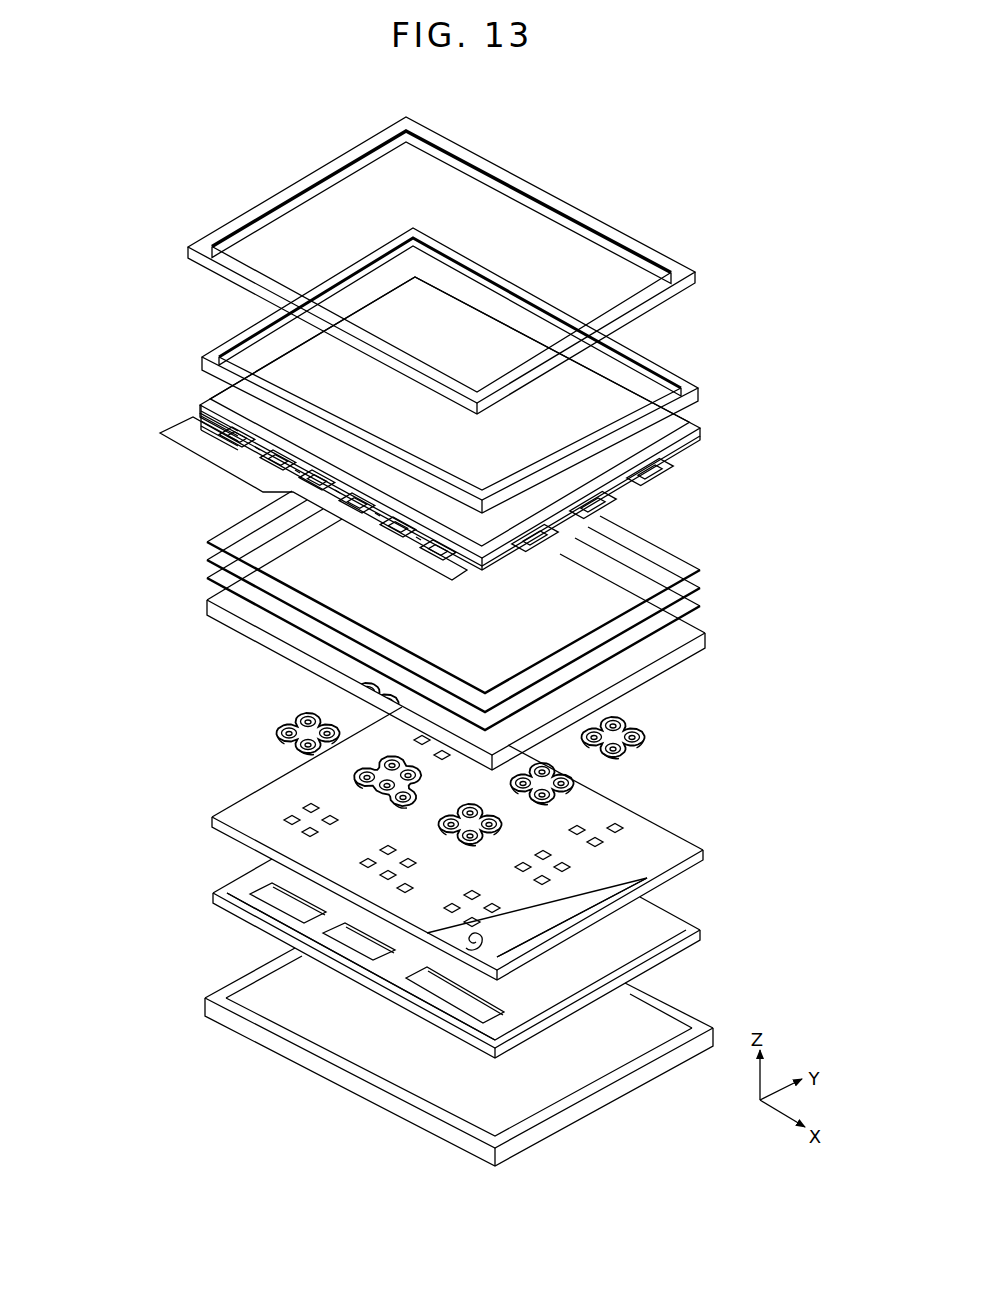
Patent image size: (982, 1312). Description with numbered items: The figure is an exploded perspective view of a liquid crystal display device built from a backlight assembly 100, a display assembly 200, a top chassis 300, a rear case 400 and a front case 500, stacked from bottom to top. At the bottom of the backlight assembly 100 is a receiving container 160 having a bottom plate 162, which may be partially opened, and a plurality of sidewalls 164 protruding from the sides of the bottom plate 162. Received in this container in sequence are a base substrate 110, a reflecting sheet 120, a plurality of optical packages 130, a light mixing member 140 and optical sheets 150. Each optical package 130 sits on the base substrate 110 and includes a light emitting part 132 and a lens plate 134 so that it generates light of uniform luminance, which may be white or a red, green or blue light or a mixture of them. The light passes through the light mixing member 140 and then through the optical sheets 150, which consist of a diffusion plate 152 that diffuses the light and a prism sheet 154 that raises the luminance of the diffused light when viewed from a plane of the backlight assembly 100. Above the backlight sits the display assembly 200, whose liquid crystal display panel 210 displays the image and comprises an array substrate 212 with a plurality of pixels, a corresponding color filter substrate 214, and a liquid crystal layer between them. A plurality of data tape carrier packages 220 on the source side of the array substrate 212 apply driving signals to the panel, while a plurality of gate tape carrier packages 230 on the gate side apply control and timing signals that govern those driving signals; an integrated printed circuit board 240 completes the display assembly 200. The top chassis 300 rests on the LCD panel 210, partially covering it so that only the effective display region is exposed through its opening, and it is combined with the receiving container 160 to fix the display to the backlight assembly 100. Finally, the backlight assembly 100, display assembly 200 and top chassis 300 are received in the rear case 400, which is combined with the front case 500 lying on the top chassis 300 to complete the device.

The backlight assembly 100 is at (526, 779).
The base substrate 110 is at (500, 957).
The reflecting sheet 120 is at (466, 939).
The optical package 130 is at (486, 831).
The light emitting part 132 is at (620, 826).
The lens plate 134 is at (646, 742).
The light mixing member 140 is at (698, 642).
The optical sheets 150 is at (499, 610).
The diffusion plate 152 is at (750, 548).
The prism sheet 154 is at (698, 575).
The receiving container 160 is at (490, 963).
The bottom plate 162 is at (525, 1005).
The sidewall 164 is at (577, 1003).
The display assembly 200 is at (435, 428).
The liquid crystal display panel 210 is at (491, 423).
The array substrate 212 is at (692, 440).
The color filter substrate 214 is at (670, 428).
The data tape carrier package 220 is at (198, 413).
The gate tape carrier package 230 is at (665, 470).
The integrated printed circuit board 240 is at (170, 432).
The top chassis 300 is at (225, 333).
The rear case 400 is at (225, 967).
The front case 500 is at (217, 218).